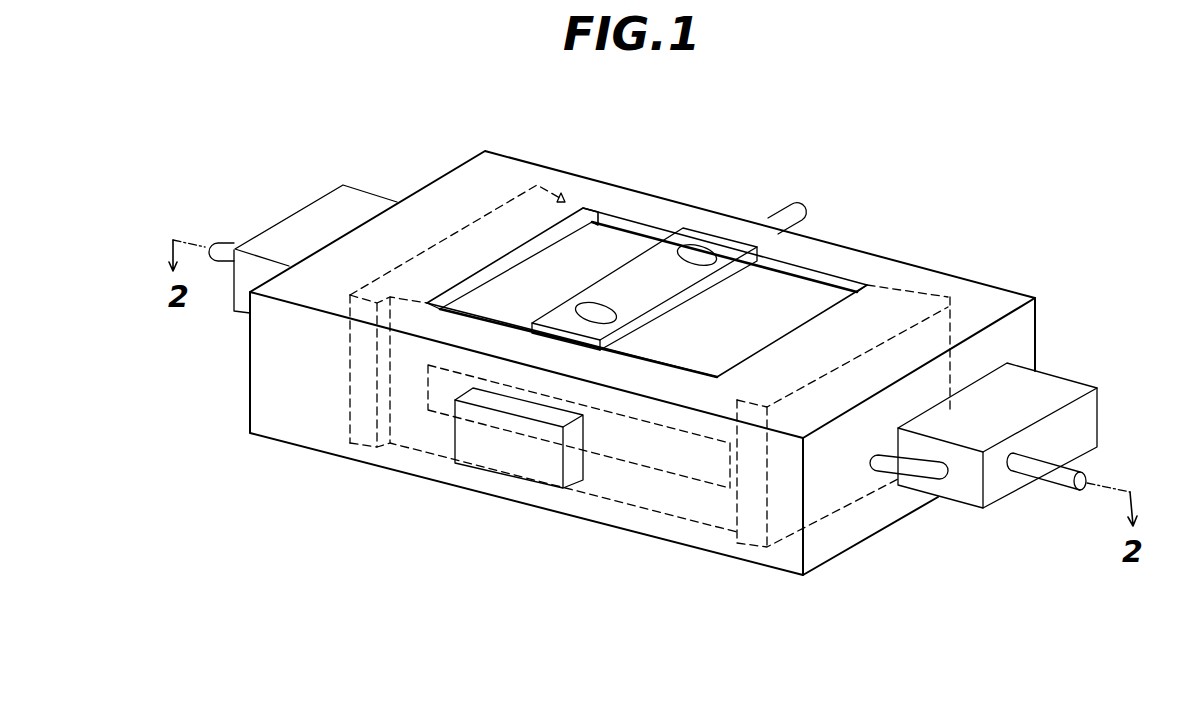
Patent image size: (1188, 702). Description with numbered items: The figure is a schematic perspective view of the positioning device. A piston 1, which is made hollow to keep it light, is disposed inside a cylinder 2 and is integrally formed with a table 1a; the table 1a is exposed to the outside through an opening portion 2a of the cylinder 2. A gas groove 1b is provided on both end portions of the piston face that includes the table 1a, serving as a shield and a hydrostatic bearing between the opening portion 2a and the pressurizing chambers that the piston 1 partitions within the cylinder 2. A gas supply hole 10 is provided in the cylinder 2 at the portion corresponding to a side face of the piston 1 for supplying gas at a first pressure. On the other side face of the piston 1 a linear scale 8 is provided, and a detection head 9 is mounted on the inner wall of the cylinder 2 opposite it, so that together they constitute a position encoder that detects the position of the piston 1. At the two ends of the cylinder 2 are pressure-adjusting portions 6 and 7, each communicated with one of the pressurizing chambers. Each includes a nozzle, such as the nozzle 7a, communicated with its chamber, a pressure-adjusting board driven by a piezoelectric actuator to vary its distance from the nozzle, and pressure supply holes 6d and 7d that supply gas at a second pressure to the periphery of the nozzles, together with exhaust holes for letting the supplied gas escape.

The piston 1 is at (797, 293).
The table 1a is at (660, 262).
The gas groove 1b is at (452, 238).
The cylinder 2 is at (903, 277).
The opening portion 2a is at (597, 212).
The pressure-adjusting portion 6 is at (302, 218).
The pressure supply hole 6d is at (225, 248).
The pressure-adjusting portion 7 is at (1067, 387).
The nozzle 7a is at (930, 472).
The pressure supply hole 7d is at (1087, 468).
The linear scale 8 is at (615, 445).
The detection head 9 is at (512, 463).
The gas supply hole 10 is at (786, 205).